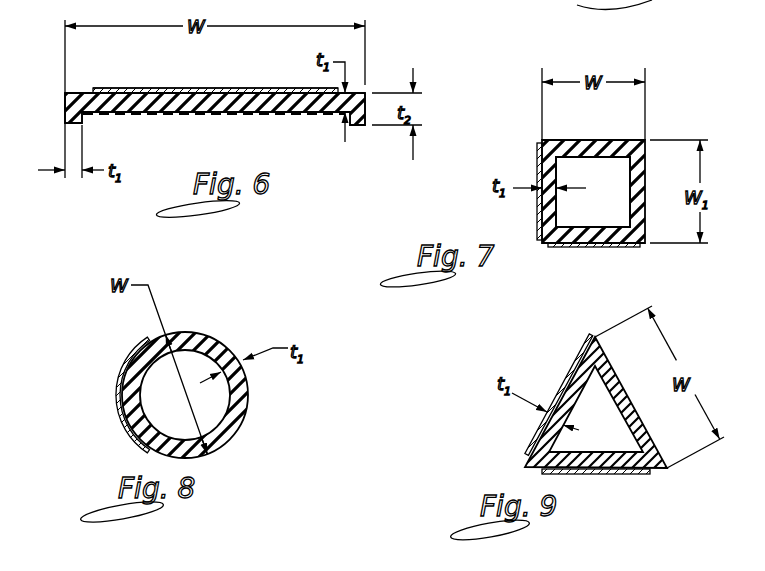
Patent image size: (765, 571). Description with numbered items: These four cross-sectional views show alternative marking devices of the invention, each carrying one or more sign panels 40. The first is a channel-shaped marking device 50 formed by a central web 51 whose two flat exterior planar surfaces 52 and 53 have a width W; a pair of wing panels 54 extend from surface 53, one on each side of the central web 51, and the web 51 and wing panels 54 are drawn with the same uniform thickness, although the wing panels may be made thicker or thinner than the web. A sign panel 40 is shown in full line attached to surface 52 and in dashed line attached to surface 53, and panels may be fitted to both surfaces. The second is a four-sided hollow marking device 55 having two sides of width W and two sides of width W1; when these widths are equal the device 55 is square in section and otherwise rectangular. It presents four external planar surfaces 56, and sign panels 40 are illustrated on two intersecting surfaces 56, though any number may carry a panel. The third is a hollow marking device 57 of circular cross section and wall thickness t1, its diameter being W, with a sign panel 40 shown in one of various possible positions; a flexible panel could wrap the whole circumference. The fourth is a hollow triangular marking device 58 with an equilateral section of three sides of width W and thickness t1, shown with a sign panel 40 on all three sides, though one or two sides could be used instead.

In FIG. 6, the sign panel 40 is at (233, 88).
In FIG. 7, the sign panel 40 is at (538, 212).
In FIG. 8, the sign panel 40 is at (150, 349).
In FIG. 9, the sign panel 40 is at (620, 377).
In FIG. 6, the marking device 50 is at (378, 78).
In FIG. 6, the central web 51 is at (273, 99).
In FIG. 6, the exterior planar surface 52 is at (94, 88).
In FIG. 6, the exterior planar surface 53 is at (85, 116).
In FIG. 6, the wing panel 54 is at (66, 113).
In FIG. 7, the marking device 55 is at (651, 136).
In FIG. 7, the external planar surface 56 is at (541, 143).
In FIG. 8, the marking device 57 is at (219, 331).
In FIG. 9, the triangular marking device 58 is at (525, 461).